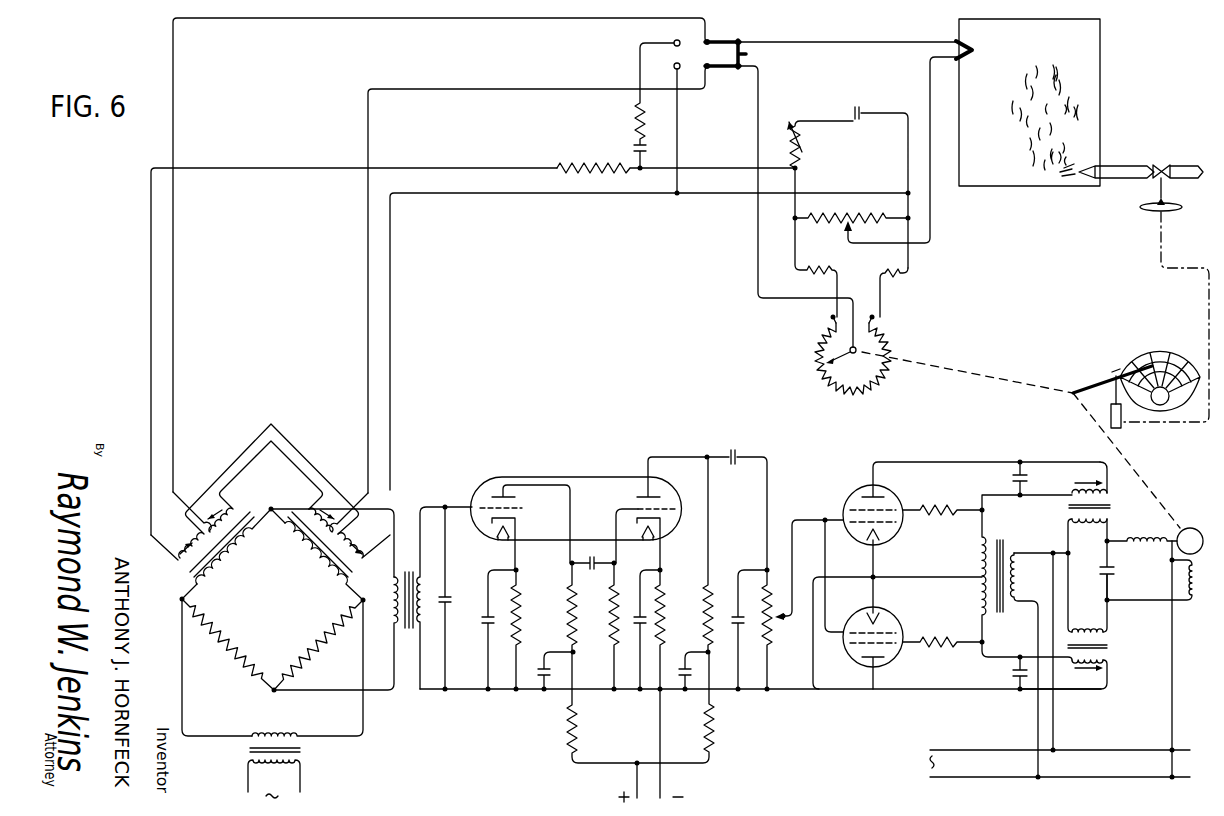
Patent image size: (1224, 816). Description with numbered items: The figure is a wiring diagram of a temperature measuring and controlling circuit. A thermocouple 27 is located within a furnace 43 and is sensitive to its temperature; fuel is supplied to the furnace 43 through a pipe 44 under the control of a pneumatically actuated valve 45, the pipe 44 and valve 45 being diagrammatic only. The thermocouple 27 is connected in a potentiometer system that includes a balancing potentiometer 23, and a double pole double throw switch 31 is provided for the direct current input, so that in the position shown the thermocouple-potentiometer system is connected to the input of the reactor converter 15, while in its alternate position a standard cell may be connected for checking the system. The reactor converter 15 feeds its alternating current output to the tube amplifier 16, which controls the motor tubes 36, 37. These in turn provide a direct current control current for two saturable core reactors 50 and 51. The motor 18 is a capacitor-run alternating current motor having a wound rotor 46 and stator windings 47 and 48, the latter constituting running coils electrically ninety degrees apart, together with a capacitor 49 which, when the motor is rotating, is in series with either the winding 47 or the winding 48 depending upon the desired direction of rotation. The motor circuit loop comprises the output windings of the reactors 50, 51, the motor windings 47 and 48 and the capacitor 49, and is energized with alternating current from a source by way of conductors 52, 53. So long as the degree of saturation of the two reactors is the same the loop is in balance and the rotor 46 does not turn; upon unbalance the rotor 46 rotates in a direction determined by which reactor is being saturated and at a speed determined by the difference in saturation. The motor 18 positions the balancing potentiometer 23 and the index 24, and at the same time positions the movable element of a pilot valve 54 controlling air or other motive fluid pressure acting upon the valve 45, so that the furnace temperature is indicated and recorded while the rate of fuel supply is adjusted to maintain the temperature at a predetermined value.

The reactor converter 15 is at (286, 617).
The tube amplifier 16 is at (596, 461).
The motor 18 is at (1132, 460).
The potentiometer 23 is at (944, 356).
The index 24 is at (1099, 384).
The thermocouple 27 is at (966, 50).
The double pole double throw switch 31 is at (815, 42).
The motor tube 36 is at (856, 487).
The motor tube 37 is at (863, 668).
The furnace 43 is at (1003, 187).
The pipe 44 is at (1117, 165).
The pneumatically actuated valve 45 is at (1162, 171).
The wound rotor 46 is at (1213, 527).
The stator winding 47 is at (1142, 529).
The stator winding 48 is at (1158, 590).
The capacitor 49 is at (1121, 571).
The saturable core reactor 50 is at (1101, 516).
The saturable core reactor 51 is at (1077, 621).
The conductor 52 is at (1055, 727).
The conductor 53 is at (1172, 722).
The pilot valve 54 is at (1124, 427).